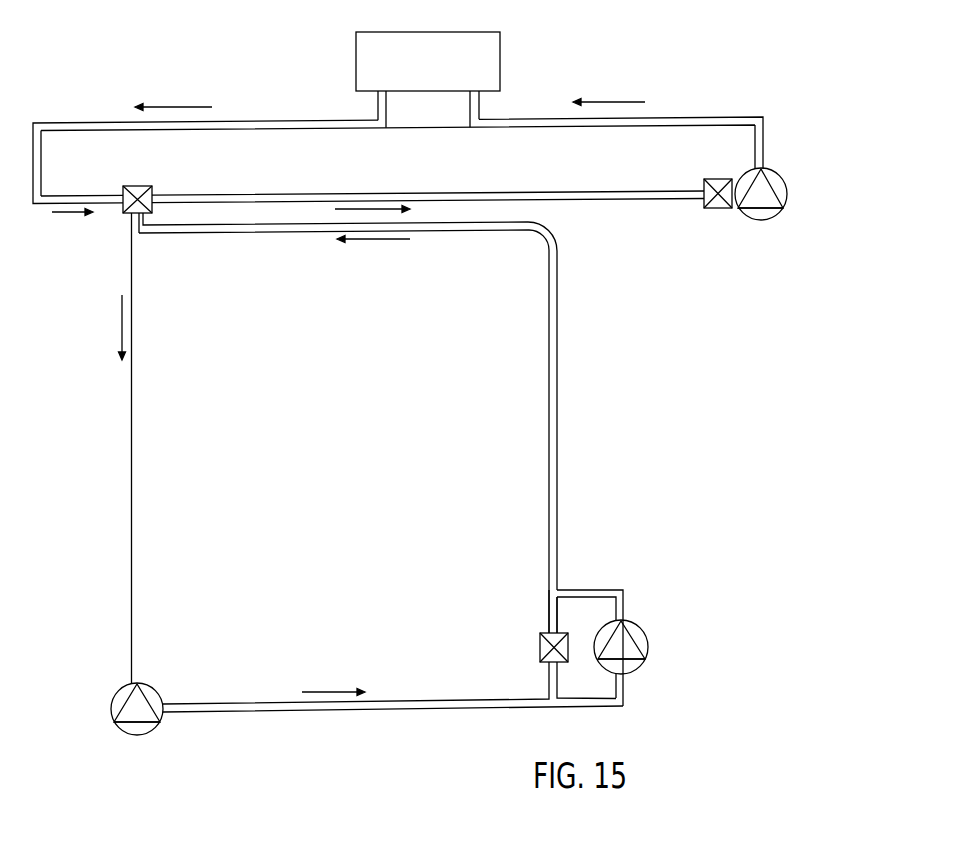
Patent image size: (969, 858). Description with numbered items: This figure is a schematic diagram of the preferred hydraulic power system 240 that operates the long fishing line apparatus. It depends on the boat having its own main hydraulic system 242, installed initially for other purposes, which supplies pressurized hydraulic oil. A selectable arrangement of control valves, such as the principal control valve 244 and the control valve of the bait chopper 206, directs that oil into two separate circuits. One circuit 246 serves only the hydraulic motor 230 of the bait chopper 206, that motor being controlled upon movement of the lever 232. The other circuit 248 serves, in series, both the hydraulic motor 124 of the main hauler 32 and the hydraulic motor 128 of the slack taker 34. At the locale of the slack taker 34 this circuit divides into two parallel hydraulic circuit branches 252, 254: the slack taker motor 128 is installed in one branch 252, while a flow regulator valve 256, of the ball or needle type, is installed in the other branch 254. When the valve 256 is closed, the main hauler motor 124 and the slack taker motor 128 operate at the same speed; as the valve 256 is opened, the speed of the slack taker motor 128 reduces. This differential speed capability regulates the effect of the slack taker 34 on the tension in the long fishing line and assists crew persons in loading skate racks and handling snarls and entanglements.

The main hydraulic system 242 is at (500, 54).
The principal control valve 244 is at (123, 207).
The circuit 246 is at (632, 202).
The lever 232 is at (718, 208).
The hydraulic motor 230 is at (777, 172).
The bait chopper 206 is at (788, 214).
The power system 240 is at (124, 488).
The circuit 248 is at (124, 425).
The hydraulic circuit branch 252 is at (588, 588).
The hydraulic circuit branch 254 is at (549, 612).
The flow regulator valve 256 is at (540, 646).
The slack taker 34 is at (646, 615).
The hydraulic motor 128 is at (640, 663).
The main hauler 32 is at (103, 724).
The hydraulic motor 124 is at (117, 688).